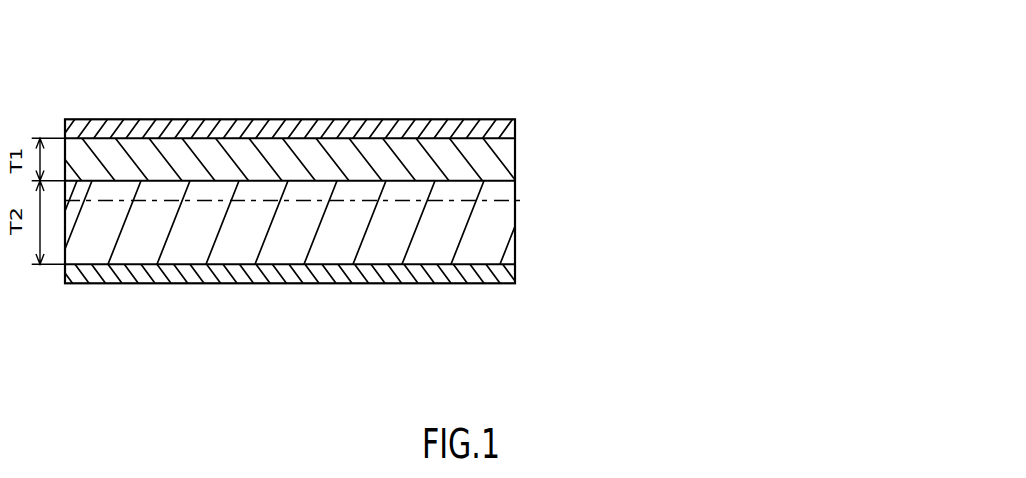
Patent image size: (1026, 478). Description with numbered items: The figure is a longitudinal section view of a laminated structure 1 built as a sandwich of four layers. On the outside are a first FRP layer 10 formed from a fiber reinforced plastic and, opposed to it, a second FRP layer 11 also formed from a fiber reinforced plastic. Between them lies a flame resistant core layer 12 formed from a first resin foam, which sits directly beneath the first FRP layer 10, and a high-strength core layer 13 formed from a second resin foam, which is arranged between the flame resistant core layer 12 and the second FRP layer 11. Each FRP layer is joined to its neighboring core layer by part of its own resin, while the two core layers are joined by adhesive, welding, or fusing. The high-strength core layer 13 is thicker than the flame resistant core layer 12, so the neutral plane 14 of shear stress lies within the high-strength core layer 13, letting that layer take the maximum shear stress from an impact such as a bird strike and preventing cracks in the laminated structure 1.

The laminated structure 1 is at (314, 78).
The first FRP layer 10 is at (515, 123).
The second FRP layer 11 is at (515, 272).
The flame resistant core layer 12 is at (515, 158).
The high-strength core layer 13 is at (515, 223).
The neutral plane 14 is at (533, 200).